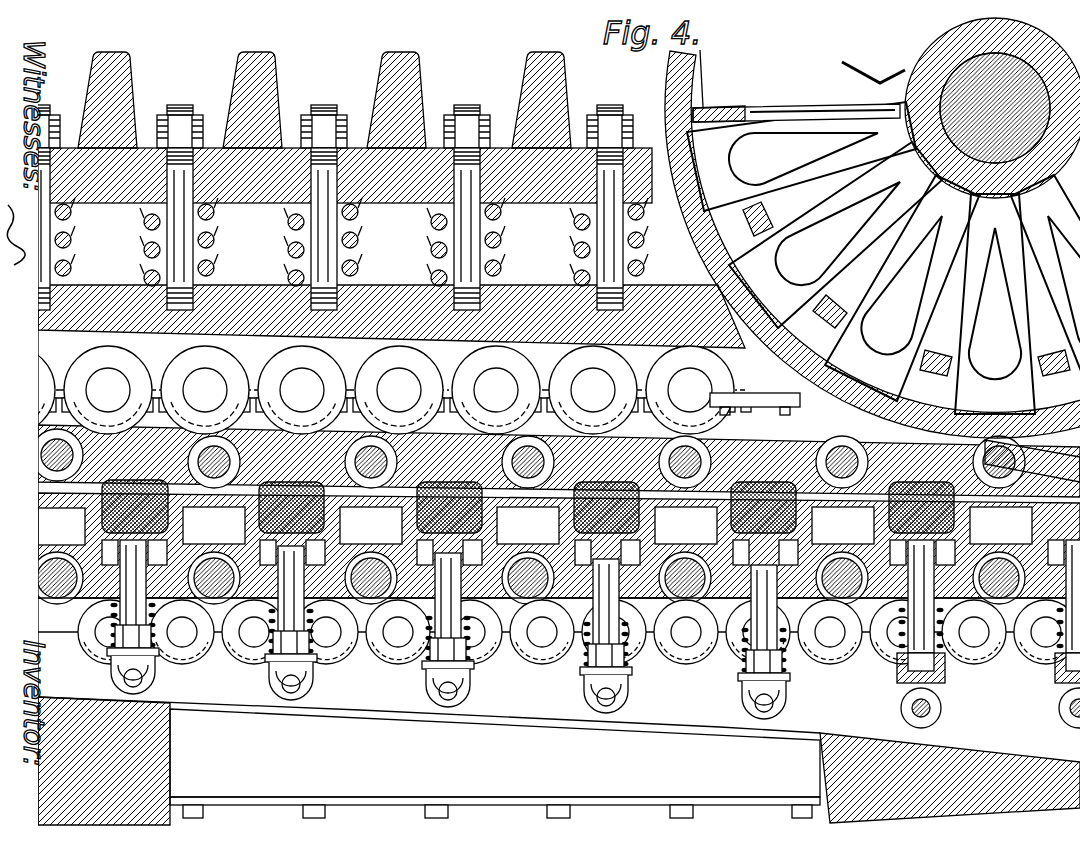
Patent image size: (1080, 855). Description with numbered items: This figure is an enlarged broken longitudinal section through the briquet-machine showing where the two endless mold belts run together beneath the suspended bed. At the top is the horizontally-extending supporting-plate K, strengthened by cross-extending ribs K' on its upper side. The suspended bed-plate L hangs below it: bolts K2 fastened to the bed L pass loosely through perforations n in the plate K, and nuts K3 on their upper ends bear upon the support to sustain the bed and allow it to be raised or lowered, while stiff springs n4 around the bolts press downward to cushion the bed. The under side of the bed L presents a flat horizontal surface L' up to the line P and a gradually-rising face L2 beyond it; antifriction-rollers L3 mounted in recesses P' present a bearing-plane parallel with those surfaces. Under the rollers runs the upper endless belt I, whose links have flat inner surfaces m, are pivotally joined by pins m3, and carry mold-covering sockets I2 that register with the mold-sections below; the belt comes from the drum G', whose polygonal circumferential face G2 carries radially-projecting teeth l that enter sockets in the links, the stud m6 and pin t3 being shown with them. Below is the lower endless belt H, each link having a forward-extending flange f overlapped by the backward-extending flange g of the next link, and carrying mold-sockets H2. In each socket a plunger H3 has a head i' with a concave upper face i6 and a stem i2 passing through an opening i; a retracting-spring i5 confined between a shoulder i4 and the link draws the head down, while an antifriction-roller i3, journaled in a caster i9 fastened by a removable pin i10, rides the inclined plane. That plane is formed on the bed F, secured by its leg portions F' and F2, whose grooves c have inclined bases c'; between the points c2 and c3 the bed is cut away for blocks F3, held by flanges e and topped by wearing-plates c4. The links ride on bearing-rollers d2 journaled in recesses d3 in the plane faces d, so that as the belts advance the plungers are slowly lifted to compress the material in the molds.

The supporting-plate K is at (345, 175).
The cross-extending ribs K' is at (324, 86).
The bolts K2 is at (372, 84).
The nuts K3 is at (182, 125).
The perforations n is at (160, 178).
The coil springs n4 is at (300, 262).
The suspended bed-plate L is at (391, 316).
The flat horizontal surface L' is at (413, 390).
The gradually-rising face L2 is at (148, 338).
The antifriction-rollers L3 is at (380, 350).
The line P is at (258, 340).
The recesses P' is at (421, 327).
The endless belt or chain I is at (555, 461).
The mold-covering sections or sockets I2 is at (1010, 470).
The flat inner surfaces m is at (860, 455).
The pins m3 is at (655, 452).
The rail piece m6 is at (950, 458).
The endless belt or chain H is at (555, 548).
The mold-sockets H2 is at (369, 530).
The plunger H3 is at (966, 554).
The forward-extending flange f is at (522, 530).
The backward-extending flange g is at (684, 530).
The openings i is at (593, 634).
The plunger head i' is at (975, 537).
The plunger shank or stem i2 is at (984, 646).
The antifriction-roller i3 is at (746, 704).
The shoulder i4 is at (788, 676).
The retracting-spring i5 is at (745, 674).
The concave upper face i6 is at (915, 425).
The heads or casters i9 is at (900, 666).
The removable pins i10 is at (975, 672).
The pin t3 is at (215, 548).
The plane horizontal surfaces d is at (372, 648).
The antifriction bearing-rollers d2 is at (236, 626).
The recesses d3 is at (72, 640).
The recesses or grooves c is at (523, 672).
The bases of the recesses c' is at (529, 728).
The point c2 is at (820, 735).
The point c3 is at (172, 705).
The wearing-plates c4 is at (534, 714).
The flanges e is at (503, 803).
The bed F is at (559, 761).
The attaching leg portion F' is at (100, 801).
The attaching leg portion F2 is at (870, 809).
The blocks F3 is at (495, 763).
The wheel hub a is at (992, 108).
The radially-projecting teeth l is at (684, 100).
The drum G' is at (799, 92).
The polygonal circumferential face G2 is at (672, 170).